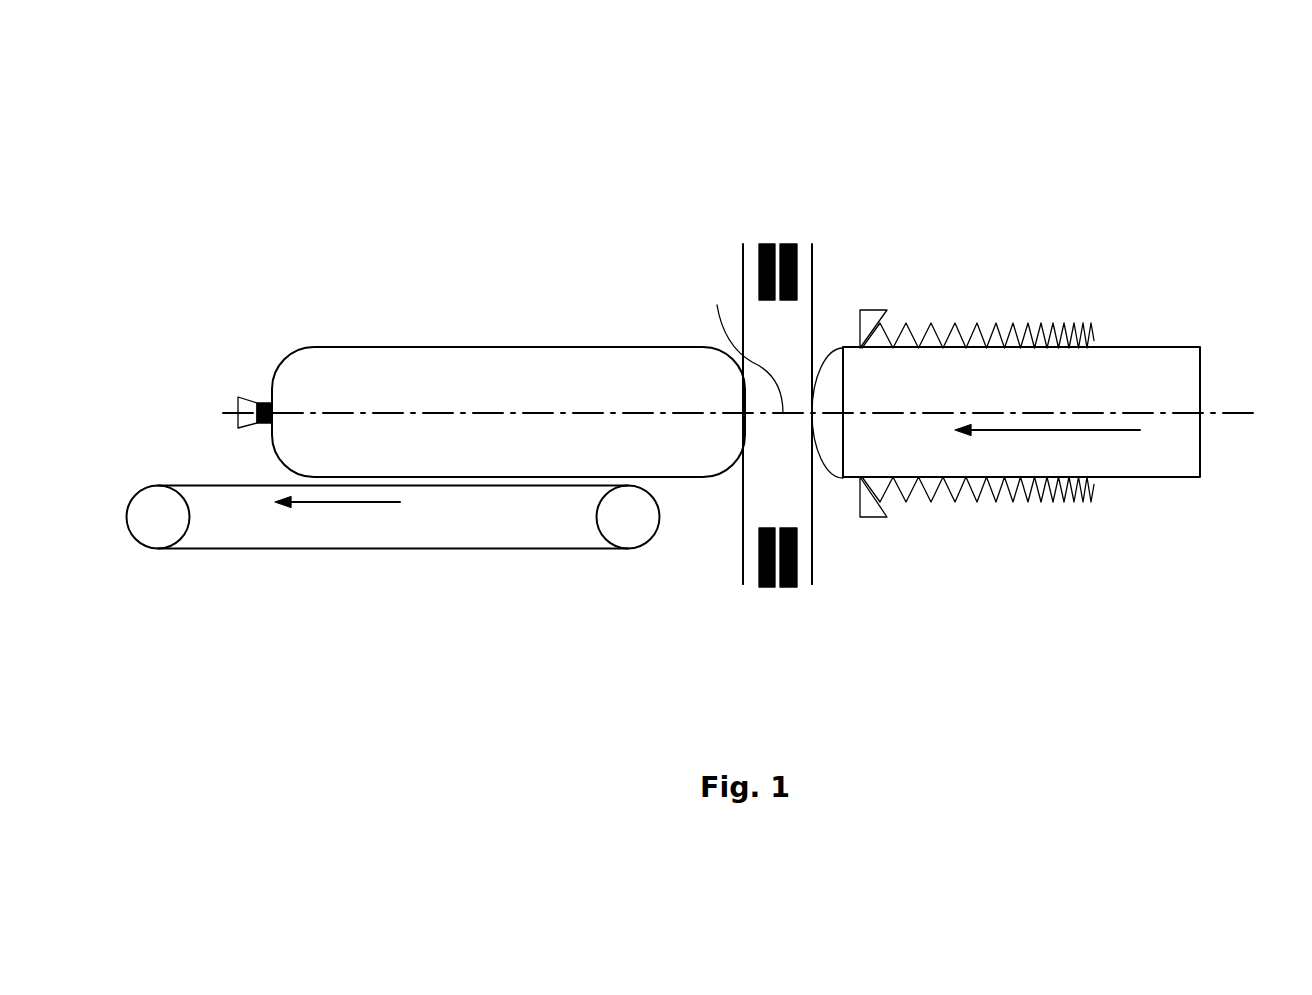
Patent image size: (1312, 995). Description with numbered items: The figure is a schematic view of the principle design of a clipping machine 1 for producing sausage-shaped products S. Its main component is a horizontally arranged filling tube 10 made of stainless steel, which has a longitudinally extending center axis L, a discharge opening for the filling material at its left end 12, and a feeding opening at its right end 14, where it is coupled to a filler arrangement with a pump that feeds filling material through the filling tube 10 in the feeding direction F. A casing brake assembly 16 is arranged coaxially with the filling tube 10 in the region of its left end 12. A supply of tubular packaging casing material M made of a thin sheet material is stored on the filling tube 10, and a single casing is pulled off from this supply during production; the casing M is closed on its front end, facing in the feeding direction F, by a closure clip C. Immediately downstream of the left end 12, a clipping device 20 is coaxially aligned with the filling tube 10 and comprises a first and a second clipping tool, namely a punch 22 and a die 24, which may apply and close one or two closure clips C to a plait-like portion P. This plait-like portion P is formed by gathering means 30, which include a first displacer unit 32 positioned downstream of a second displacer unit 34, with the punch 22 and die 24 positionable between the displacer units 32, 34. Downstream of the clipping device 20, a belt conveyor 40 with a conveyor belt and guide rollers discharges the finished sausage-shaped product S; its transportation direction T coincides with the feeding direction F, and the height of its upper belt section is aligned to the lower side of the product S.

The clipping machine 1 is at (940, 158).
The filling tube 10 is at (1053, 391).
The left end 12 is at (845, 438).
The right end 14 is at (1200, 368).
The casing brake assembly 16 is at (888, 310).
The clipping device 20 is at (770, 351).
The punch 22 is at (797, 268).
The die 24 is at (758, 553).
The gathering means 30 is at (858, 566).
The first displacer unit 32 is at (813, 500).
The second displacer unit 34 is at (744, 487).
The belt conveyor 40 is at (393, 582).
The sausage-shaped product S is at (465, 347).
The closure clip C is at (266, 402).
The plait-like portion P is at (743, 342).
The tubular packaging casing material M is at (1045, 330).
The feeding direction F is at (1047, 446).
The transportation direction T is at (337, 517).
The center axis L is at (1222, 415).